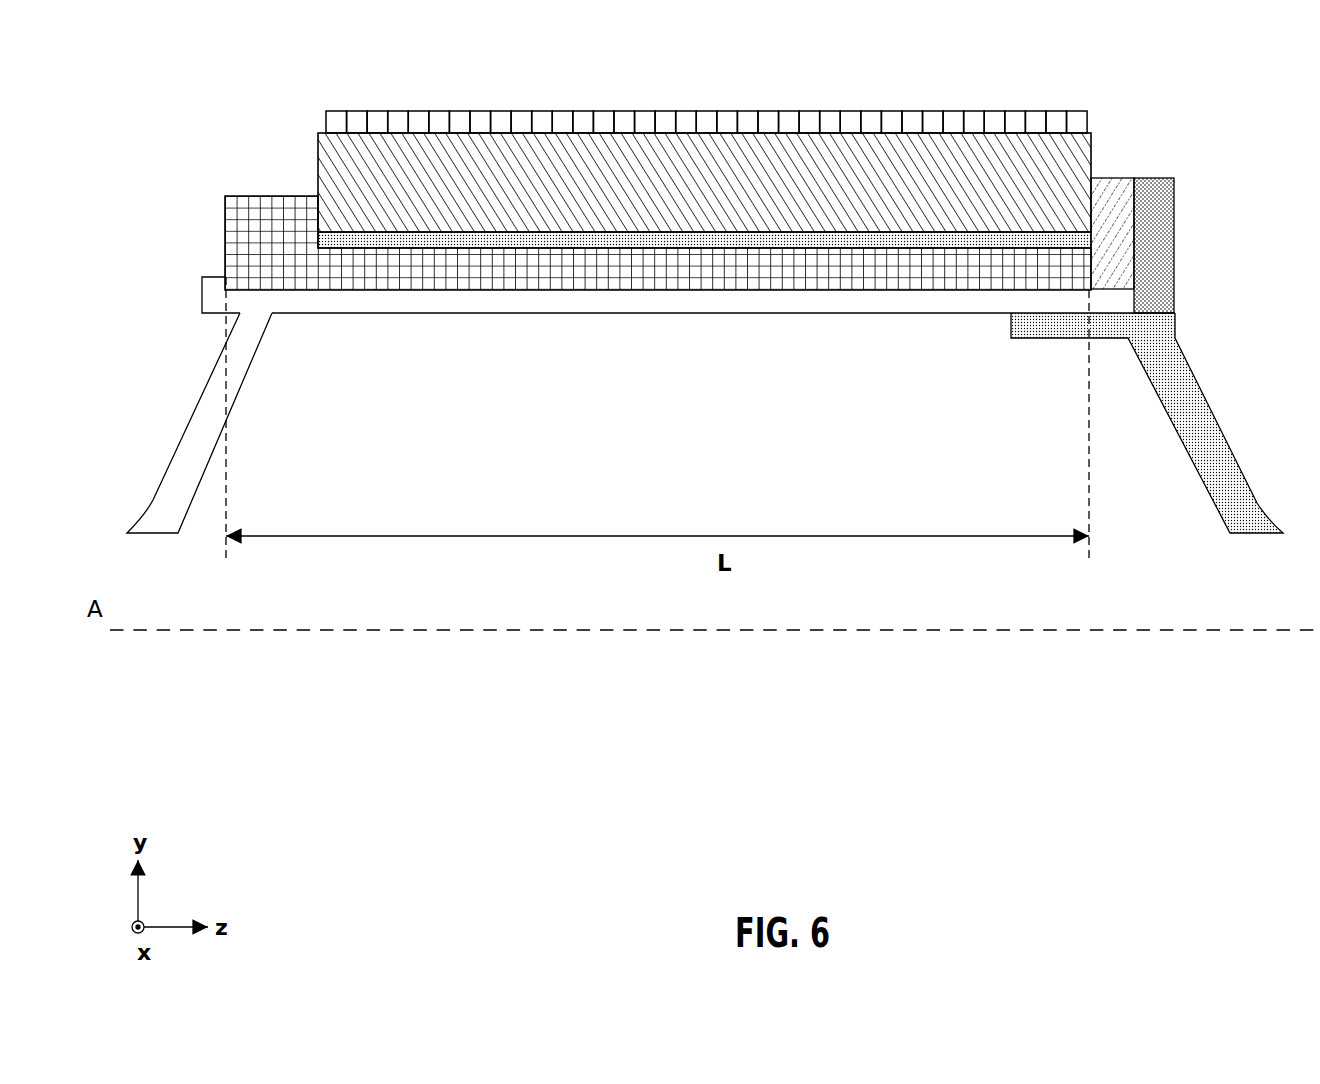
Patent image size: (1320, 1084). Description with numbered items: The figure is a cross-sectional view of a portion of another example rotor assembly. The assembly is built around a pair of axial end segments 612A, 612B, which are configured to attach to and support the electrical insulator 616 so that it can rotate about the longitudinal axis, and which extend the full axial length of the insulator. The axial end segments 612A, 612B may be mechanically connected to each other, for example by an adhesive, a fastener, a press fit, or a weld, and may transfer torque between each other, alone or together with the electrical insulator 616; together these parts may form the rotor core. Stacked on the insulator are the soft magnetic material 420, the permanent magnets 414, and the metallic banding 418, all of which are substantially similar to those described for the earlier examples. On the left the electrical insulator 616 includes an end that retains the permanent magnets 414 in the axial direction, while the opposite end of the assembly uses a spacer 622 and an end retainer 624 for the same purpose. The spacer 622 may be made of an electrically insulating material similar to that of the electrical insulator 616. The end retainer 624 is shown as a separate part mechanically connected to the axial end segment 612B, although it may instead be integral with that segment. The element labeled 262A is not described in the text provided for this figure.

The encapsulant / mold compound 262A is at (245, 253).
The permanent magnets 414 is at (352, 182).
The metallic banding 418 is at (450, 131).
The soft magnetic material 420 is at (590, 236).
The electrical insulator 616 is at (492, 278).
The spacer 622 is at (1111, 192).
The end retainer 624 is at (1157, 215).
The axial end segment 612A is at (208, 440).
The axial end segment 612B is at (1177, 390).